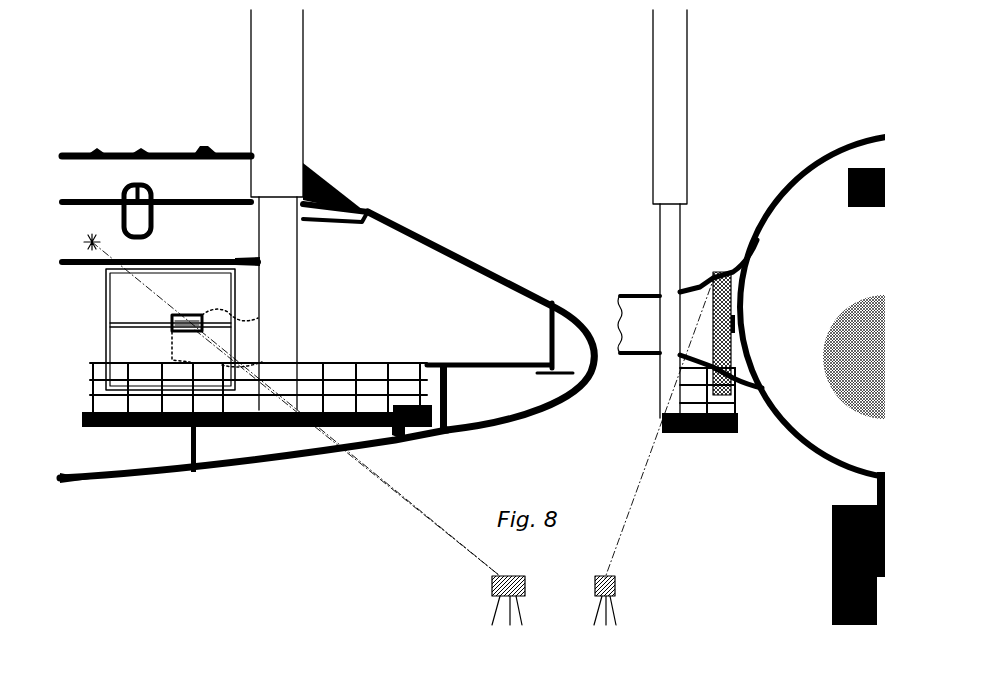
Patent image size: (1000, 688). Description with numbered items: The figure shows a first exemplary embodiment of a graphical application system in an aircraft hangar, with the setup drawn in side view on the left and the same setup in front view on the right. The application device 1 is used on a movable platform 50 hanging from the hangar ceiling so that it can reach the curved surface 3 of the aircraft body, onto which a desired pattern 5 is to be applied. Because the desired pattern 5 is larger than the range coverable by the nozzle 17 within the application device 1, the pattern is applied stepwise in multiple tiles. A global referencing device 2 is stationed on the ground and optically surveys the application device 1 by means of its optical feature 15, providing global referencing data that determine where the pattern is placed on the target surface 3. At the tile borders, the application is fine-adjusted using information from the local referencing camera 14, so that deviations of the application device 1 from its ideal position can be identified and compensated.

The application device 1 is at (113, 327).
The global referencing device 2 is at (492, 585).
The curved surface 3 is at (349, 168).
The desired pattern 5 is at (243, 320).
The local referencing camera 14 is at (192, 332).
The optical feature 15 is at (92, 242).
The nozzle 17 is at (238, 429).
The movable platform 50 is at (283, 83).